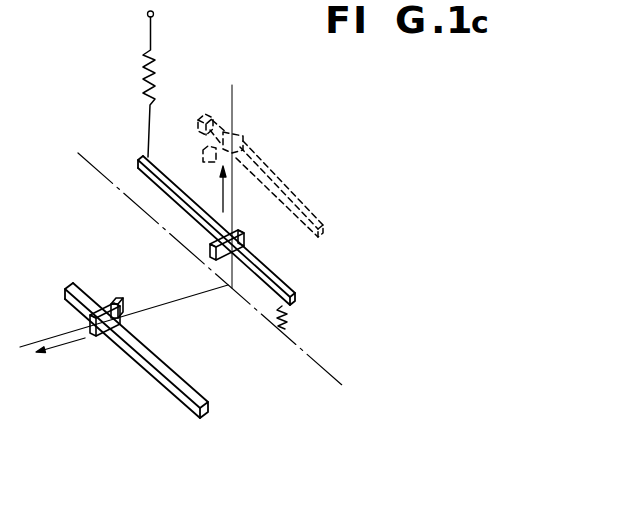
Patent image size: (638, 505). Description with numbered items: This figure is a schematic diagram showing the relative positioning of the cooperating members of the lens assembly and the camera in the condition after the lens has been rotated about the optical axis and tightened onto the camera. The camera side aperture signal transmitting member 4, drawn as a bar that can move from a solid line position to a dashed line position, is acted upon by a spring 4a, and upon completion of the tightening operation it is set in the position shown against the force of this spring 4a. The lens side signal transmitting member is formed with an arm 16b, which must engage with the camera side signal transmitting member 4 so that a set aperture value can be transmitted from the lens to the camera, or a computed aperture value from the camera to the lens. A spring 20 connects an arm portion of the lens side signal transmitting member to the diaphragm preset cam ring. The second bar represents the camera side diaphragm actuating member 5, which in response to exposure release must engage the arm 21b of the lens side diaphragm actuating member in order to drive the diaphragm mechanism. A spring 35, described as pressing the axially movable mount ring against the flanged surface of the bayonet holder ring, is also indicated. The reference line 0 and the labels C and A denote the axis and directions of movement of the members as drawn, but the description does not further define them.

The spring 4a is at (157, 69).
The aperture signal transmitting member 4 is at (205, 208).
The arm 16b is at (297, 300).
The spring 20 is at (289, 323).
The arm 21b is at (206, 419).
The spring 35 is at (84, 288).
The diaphragm actuating member 5 is at (124, 311).
The axis 0-0' 0 is at (195, 244).
The direction C is at (219, 189).
The direction A is at (60, 361).